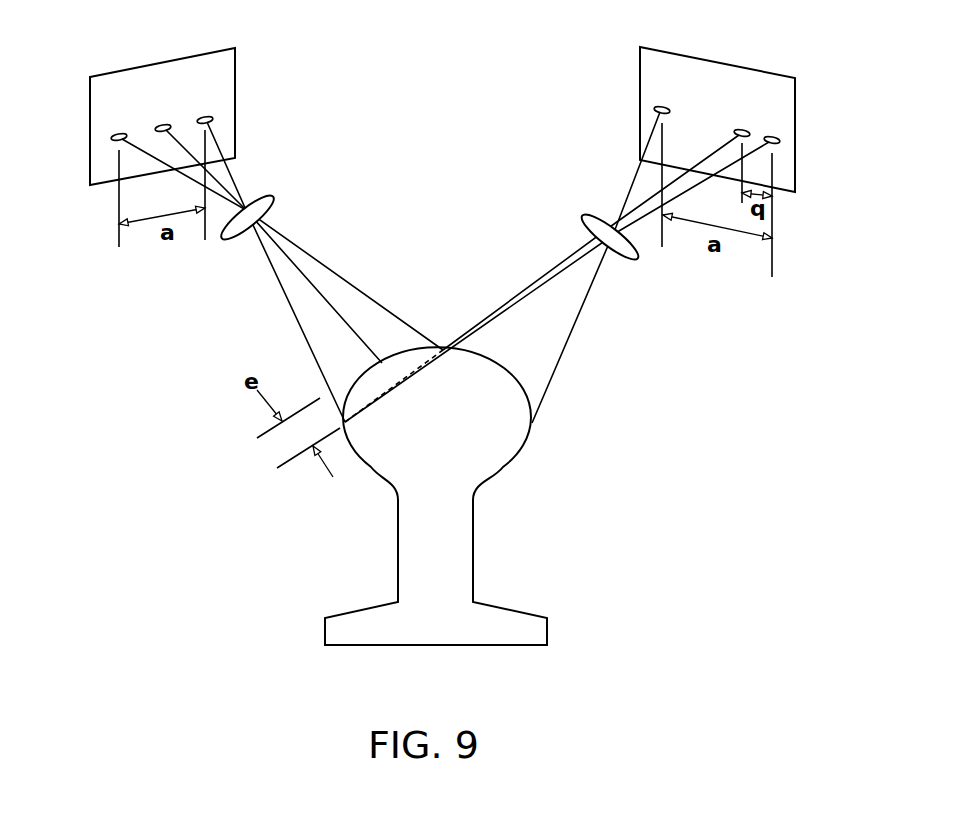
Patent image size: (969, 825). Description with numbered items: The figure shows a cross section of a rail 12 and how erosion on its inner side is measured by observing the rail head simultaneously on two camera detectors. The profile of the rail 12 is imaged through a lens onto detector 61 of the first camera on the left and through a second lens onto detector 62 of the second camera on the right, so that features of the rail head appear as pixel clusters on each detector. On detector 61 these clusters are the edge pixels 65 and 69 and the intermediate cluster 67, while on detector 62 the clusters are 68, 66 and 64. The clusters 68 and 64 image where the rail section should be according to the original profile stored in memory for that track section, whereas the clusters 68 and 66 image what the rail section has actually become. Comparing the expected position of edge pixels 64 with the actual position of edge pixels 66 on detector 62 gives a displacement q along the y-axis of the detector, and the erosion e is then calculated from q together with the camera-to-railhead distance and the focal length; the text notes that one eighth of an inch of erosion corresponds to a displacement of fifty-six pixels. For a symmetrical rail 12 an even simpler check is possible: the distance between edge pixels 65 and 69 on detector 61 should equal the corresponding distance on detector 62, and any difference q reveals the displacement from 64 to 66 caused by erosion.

The rail 12 is at (473, 550).
The detector 61 is at (222, 78).
The detector 62 is at (650, 80).
The pixel cluster 64 is at (772, 136).
The edge pixels 65 is at (119, 133).
The pixel cluster 66 is at (742, 129).
The pixel cluster 67 is at (163, 124).
The pixel cluster 68 is at (662, 106).
The edge pixels 69 is at (205, 115).